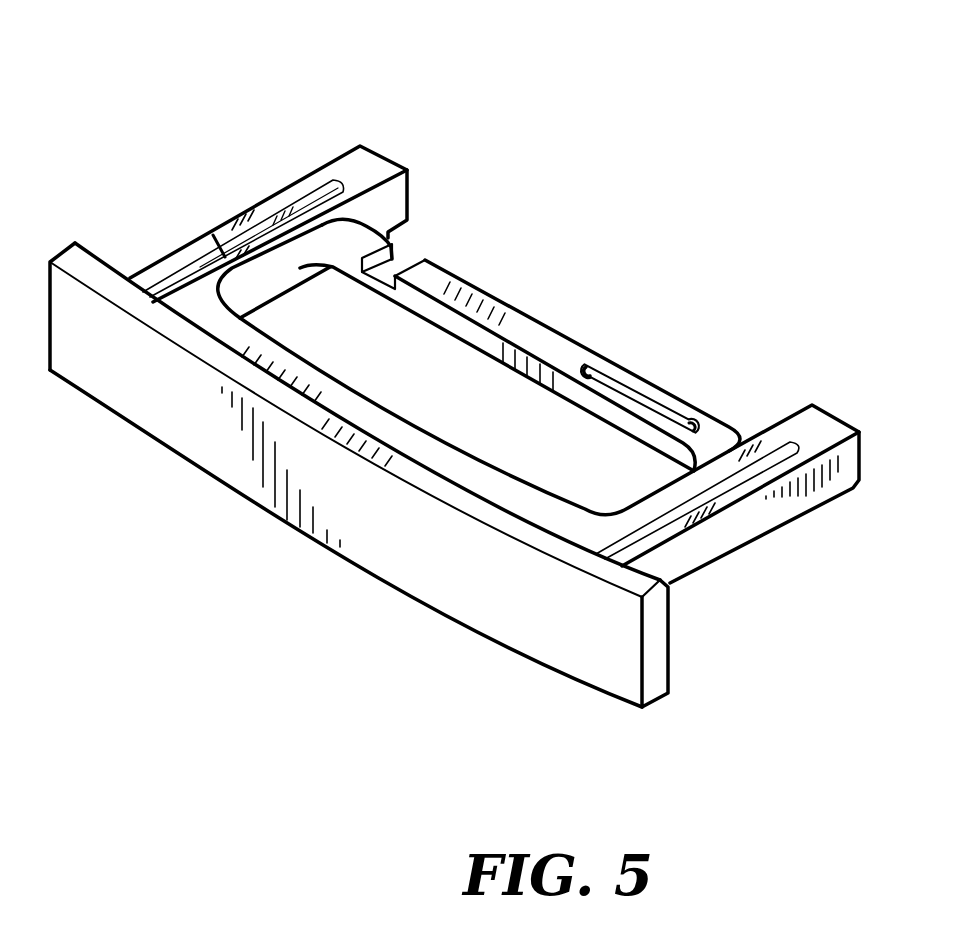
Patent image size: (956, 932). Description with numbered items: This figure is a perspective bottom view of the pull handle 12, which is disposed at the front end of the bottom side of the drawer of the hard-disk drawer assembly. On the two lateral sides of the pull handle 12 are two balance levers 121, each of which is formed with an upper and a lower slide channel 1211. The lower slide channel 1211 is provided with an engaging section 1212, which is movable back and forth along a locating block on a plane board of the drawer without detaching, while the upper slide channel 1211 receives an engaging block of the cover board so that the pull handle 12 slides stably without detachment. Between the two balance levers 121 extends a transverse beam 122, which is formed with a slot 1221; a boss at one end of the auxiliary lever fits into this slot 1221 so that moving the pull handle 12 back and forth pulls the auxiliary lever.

The pull handle 12 is at (387, 560).
The balance lever 121 is at (242, 159).
The slide channel 1211 is at (213, 235).
The engaging section 1212 is at (327, 181).
The transverse beam 122 is at (547, 332).
The slot 1221 is at (650, 397).